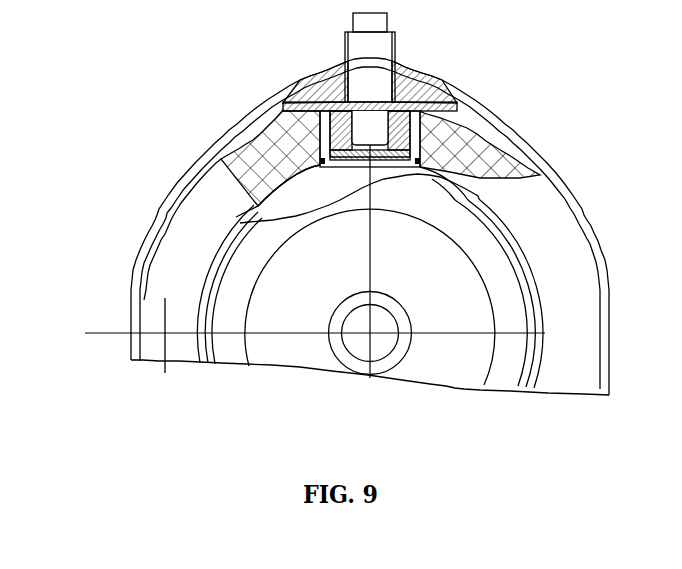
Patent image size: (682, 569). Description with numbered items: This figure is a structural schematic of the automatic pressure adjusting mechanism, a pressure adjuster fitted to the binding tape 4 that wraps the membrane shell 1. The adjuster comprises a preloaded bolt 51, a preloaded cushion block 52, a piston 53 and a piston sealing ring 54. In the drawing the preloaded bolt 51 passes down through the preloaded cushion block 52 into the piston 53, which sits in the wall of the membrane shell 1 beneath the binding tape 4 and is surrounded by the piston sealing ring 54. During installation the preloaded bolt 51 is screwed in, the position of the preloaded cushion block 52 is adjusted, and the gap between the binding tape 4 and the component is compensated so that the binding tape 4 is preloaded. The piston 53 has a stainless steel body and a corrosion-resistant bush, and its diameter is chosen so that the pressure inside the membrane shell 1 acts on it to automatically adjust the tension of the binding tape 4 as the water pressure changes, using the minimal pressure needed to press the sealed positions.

The membrane shell 1 is at (165, 295).
The binding tape 4 is at (163, 203).
The preloaded bolt 51 is at (345, 88).
The preloaded cushion block 52 is at (283, 102).
The piston 53 is at (403, 116).
The piston sealing ring 54 is at (425, 157).